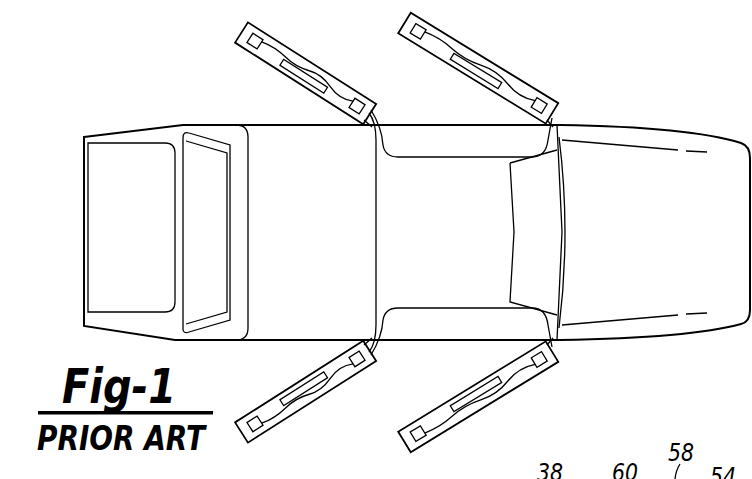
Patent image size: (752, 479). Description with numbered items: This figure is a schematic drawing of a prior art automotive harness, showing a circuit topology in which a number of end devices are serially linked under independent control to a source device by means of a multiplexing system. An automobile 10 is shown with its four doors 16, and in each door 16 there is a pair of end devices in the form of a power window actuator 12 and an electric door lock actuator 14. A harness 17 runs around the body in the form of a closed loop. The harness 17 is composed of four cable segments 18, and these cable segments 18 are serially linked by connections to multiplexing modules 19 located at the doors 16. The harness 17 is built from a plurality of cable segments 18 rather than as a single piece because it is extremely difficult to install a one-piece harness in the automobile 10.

The automobile 10 is at (667, 128).
The power window actuator 12 is at (298, 81).
The electric door lock actuator 14 is at (265, 38).
The door 16 is at (326, 73).
The harness 17 is at (357, 275).
The cable segment 18 is at (374, 228).
The multiplexing module 19 is at (372, 98).